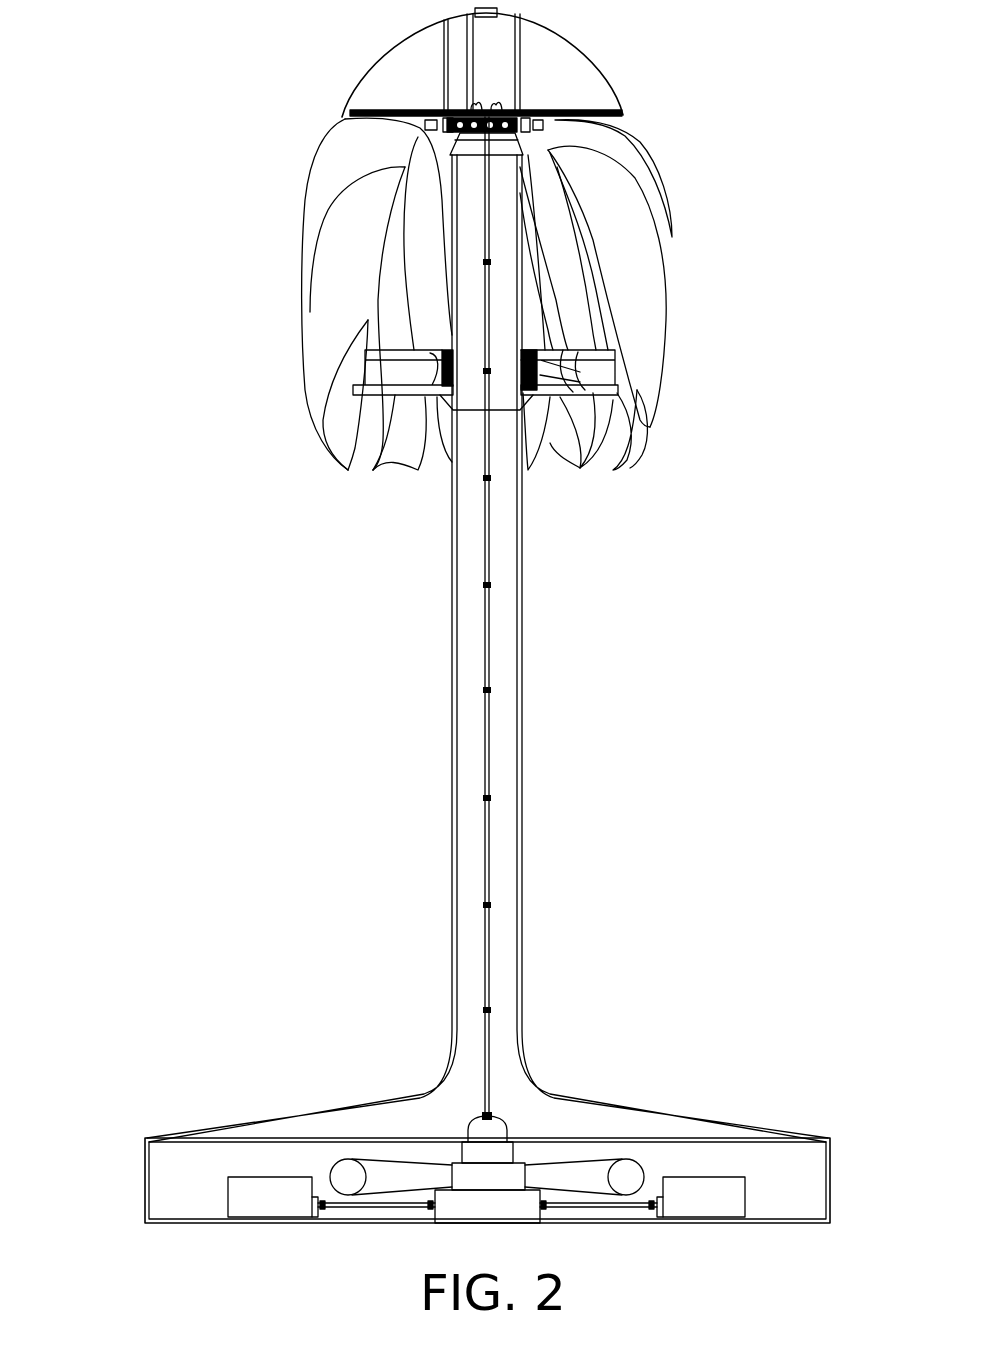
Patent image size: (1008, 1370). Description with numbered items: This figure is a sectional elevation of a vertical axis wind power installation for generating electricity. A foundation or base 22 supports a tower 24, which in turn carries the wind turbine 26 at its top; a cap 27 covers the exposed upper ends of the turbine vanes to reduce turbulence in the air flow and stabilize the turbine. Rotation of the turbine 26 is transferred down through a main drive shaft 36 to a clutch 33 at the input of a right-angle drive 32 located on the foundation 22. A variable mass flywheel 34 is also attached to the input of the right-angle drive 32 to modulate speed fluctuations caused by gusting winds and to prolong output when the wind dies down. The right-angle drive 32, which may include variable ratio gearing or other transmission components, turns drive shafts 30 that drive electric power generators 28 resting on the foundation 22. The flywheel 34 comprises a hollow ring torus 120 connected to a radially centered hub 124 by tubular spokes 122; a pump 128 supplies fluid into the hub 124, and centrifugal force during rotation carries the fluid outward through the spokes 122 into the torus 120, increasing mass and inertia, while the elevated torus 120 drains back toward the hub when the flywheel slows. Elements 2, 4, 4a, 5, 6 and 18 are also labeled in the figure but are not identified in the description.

The frond assembly 2 is at (668, 284).
The cap 4 is at (614, 95).
The cap plate 4a is at (574, 105).
The hub collar 5 is at (622, 384).
The motor block 6 is at (492, 103).
The wire 18 is at (428, 1216).
The foundation or base 22 is at (145, 1165).
The tower 24 is at (521, 766).
The wind turbine 26 is at (288, 100).
The cap 27 is at (562, 42).
The electric power generator 28 is at (726, 1212).
The drive shaft 30 is at (593, 1212).
The right-angle drive 32 is at (495, 1212).
The clutch 33 is at (505, 1140).
The variable mass flywheel 34 is at (330, 1158).
The main drive shaft 36 is at (488, 728).
The hollow ring torus 120 is at (350, 1170).
The tubular spokes 122 is at (398, 1170).
The hub 124 is at (525, 1165).
The pump 128 is at (250, 1212).